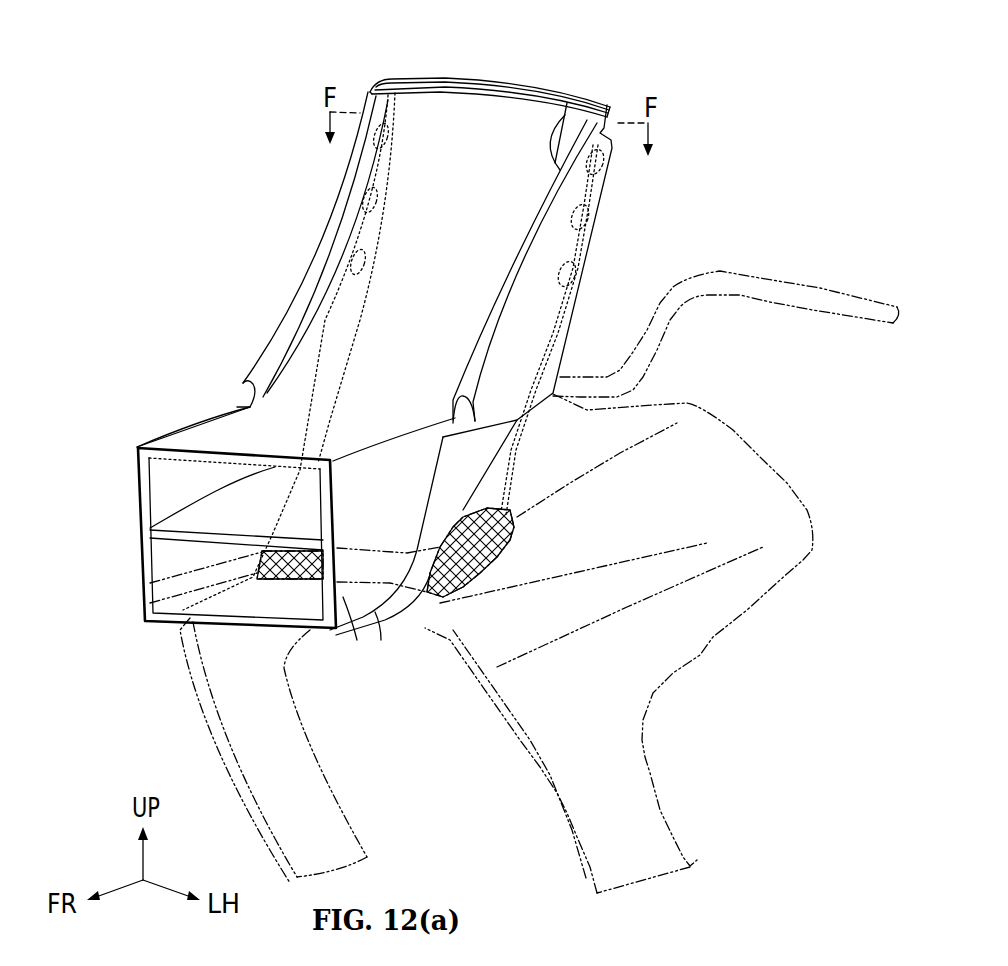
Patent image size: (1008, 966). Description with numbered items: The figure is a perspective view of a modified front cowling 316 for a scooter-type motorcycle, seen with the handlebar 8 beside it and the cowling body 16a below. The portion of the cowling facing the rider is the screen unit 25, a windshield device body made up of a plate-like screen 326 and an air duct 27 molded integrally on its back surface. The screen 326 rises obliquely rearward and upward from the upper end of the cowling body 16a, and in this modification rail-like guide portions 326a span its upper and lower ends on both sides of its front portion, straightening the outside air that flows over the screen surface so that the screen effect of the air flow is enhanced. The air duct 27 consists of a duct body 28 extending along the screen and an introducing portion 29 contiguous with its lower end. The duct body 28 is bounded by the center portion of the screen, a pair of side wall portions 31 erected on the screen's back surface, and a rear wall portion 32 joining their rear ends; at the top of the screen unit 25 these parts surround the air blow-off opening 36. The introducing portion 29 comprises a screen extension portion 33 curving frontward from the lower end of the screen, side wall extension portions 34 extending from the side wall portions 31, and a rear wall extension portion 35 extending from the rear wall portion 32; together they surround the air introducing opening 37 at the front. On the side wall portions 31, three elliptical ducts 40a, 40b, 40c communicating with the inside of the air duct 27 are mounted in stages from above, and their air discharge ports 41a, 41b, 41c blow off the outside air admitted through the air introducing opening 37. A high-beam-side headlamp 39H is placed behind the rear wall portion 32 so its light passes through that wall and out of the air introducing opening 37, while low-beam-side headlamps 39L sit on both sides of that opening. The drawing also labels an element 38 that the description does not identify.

The front cowling 316 is at (421, 441).
The screen unit 25 is at (320, 135).
The air blow-off opening 36 is at (440, 104).
The screen 326 is at (427, 213).
The rail-like guide portions 326a is at (587, 58).
The side wall portions 31 is at (343, 293).
The rear wall portion 32 is at (537, 331).
The air discharge port 41a is at (681, 152).
The air discharge port 41b is at (659, 204).
The air discharge port 41c is at (654, 265).
The duct 40a is at (608, 162).
The duct 40b is at (603, 217).
The duct 40c is at (587, 277).
The air duct 27 is at (528, 409).
The duct body 28 is at (556, 251).
The introducing portion 29 is at (372, 602).
The screen extension portion 33 is at (230, 440).
The side wall extension portions 34 is at (183, 558).
The partition wall 38 is at (185, 522).
The high-beam-side headlamp 39H is at (175, 599).
The low-beam-side headlamps 39L is at (480, 575).
The air introducing opening 37 is at (210, 615).
The rear wall extension portion 35 is at (270, 610).
The cowling body 16a is at (752, 443).
The handlebar 8 is at (818, 283).